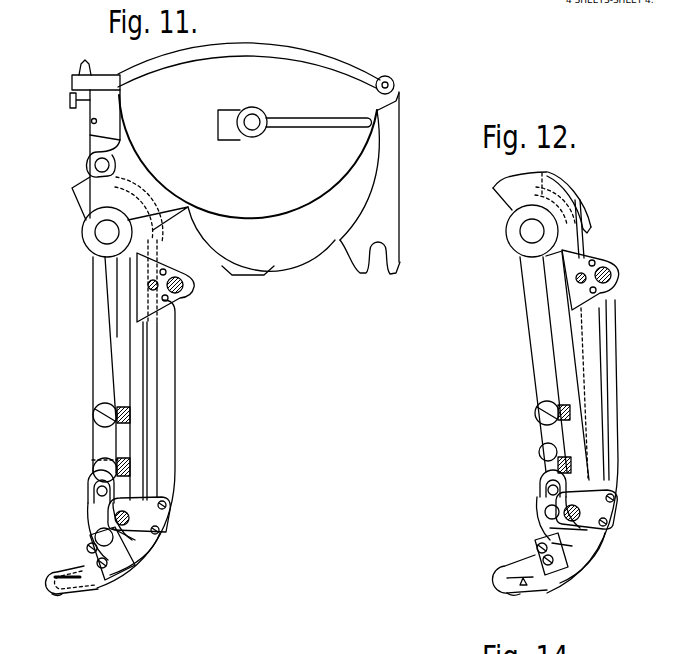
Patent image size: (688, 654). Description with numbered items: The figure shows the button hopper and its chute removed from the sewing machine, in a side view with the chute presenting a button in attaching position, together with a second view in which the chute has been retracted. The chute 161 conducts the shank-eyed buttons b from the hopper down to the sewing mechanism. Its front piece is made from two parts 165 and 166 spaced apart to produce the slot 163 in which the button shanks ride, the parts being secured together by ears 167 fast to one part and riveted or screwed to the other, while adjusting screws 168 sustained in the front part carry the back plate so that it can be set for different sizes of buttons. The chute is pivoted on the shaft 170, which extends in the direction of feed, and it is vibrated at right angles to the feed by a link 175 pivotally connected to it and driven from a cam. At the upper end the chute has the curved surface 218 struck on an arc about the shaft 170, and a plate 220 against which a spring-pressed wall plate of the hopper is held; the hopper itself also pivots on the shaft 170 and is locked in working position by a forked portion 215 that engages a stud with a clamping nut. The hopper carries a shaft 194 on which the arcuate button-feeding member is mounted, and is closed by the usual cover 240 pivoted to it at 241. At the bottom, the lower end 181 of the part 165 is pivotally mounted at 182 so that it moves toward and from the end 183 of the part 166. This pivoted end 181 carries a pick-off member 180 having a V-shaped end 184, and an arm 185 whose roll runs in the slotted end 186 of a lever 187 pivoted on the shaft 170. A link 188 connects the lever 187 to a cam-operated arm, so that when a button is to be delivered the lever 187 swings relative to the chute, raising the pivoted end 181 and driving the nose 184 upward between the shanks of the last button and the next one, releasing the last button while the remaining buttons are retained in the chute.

In FIG. 11, the cover 240 is at (311, 43).
In FIG. 11, the pivot of the cover 241 is at (390, 80).
In FIG. 11, the shaft 194 is at (256, 118).
In FIG. 11, the curved surface 218 is at (125, 166).
In FIG. 12, the curved surface 218 is at (530, 172).
In FIG. 11, the plate 220 is at (147, 197).
In FIG. 12, the plate 220 is at (571, 189).
In FIG. 11, the shaft 170 is at (104, 231).
In FIG. 12, the shaft 170 is at (530, 230).
In FIG. 11, the forked portion 215 is at (392, 258).
In FIG. 11, the lever 187 is at (97, 360).
In FIG. 12, the lever 187 is at (533, 355).
In FIG. 11, the front piece part 165 is at (146, 350).
In FIG. 12, the front piece part 165 is at (578, 350).
In FIG. 11, the front piece part 166 is at (166, 361).
In FIG. 12, the front piece part 166 is at (602, 365).
In FIG. 11, the chute 161 is at (175, 392).
In FIG. 12, the chute 161 is at (616, 422).
In FIG. 11, the slot 163 is at (158, 462).
In FIG. 12, the slot 163 is at (593, 395).
In FIG. 11, the ears 167 is at (178, 298).
In FIG. 12, the ears 167 is at (598, 258).
In FIG. 11, the adjusting screws 168 is at (184, 285).
In FIG. 12, the adjusting screws 168 is at (612, 275).
In FIG. 11, the link 188 is at (123, 406).
In FIG. 12, the link 188 is at (553, 402).
In FIG. 11, the link 175 is at (128, 455).
In FIG. 12, the link 175 is at (560, 437).
In FIG. 11, the slotted end 186 is at (88, 487).
In FIG. 12, the slotted end 186 is at (540, 475).
In FIG. 11, the arm 185 is at (92, 518).
In FIG. 12, the arm 185 is at (542, 500).
In FIG. 11, the pivot 182 is at (137, 537).
In FIG. 12, the pivot 182 is at (535, 523).
In FIG. 11, the pick-off member 180 is at (104, 581).
In FIG. 12, the pick-off member 180 is at (550, 573).
In FIG. 11, the lower end 181 is at (63, 562).
In FIG. 12, the lower end 181 is at (510, 560).
In FIG. 11, the end 183 is at (58, 596).
In FIG. 12, the end 183 is at (513, 587).
In FIG. 11, the V-shaped end 184 is at (78, 596).
In FIG. 12, the V-shaped end 184 is at (527, 585).
In FIG. 11, the shank-eyed buttons b is at (52, 572).